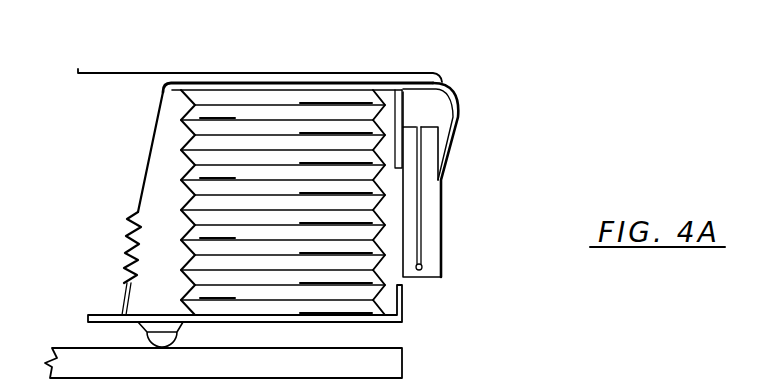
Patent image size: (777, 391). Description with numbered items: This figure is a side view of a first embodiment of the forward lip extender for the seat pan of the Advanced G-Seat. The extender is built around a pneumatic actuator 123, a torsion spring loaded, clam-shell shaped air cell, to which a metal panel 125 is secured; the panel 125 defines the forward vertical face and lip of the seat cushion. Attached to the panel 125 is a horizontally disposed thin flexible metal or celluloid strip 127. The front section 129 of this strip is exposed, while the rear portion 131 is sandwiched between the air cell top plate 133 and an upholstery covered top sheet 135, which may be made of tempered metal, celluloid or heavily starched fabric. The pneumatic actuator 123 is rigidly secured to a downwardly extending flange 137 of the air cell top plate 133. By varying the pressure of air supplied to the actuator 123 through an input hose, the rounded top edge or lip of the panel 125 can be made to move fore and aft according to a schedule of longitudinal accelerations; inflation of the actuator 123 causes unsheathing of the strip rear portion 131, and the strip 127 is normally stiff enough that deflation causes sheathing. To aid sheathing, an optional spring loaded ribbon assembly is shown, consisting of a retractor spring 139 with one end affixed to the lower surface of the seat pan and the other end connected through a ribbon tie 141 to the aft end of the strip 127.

The pneumatic actuator 123 is at (438, 232).
The metal panel 125 is at (453, 136).
The thin flexible metal or celluloid strip 127 is at (424, 78).
The front section 129 is at (437, 48).
The rear portion 131 is at (373, 48).
The air cell top plate 133 is at (167, 87).
The upholstery covered top sheet 135 is at (157, 73).
The downwardly extending flange 137 is at (403, 107).
The retractor spring 139 is at (122, 265).
The ribbon tie 141 is at (143, 188).